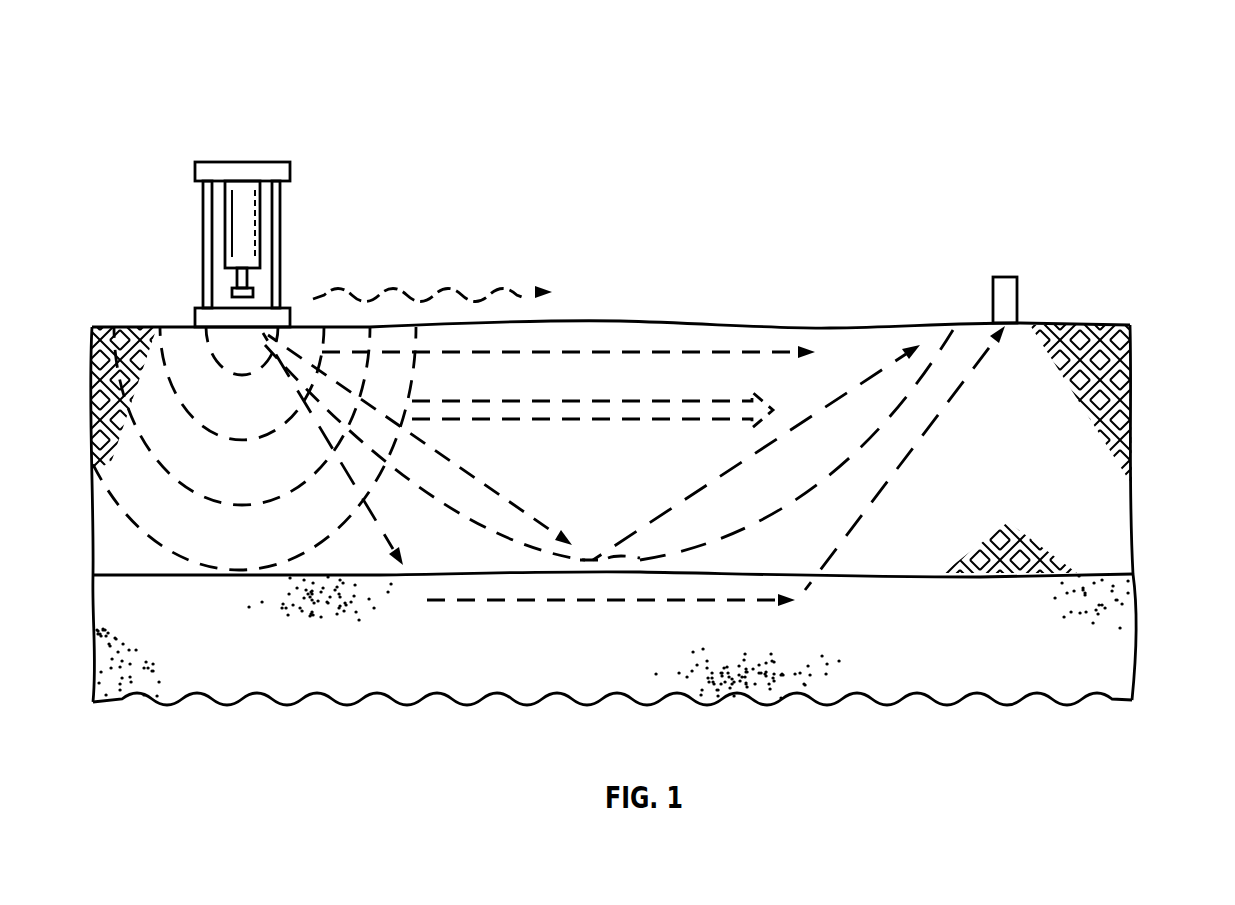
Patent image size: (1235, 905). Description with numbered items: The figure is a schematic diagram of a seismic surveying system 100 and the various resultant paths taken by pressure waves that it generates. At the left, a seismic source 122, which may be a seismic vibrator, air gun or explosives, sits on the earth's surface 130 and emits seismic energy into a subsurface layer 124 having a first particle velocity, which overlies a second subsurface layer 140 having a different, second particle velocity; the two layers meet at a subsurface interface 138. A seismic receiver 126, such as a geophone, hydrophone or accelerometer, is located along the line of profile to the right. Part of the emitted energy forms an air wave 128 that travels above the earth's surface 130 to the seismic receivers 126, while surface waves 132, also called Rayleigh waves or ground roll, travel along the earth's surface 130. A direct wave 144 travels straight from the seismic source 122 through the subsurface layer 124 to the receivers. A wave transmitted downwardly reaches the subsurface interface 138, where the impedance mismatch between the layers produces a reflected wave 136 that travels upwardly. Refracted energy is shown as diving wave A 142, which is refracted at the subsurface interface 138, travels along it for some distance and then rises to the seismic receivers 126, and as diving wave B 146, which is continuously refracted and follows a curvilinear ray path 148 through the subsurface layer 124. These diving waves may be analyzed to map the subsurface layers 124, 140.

The seismic surveying system 100 is at (1018, 121).
The seismic source 122 is at (243, 161).
The subsurface layer 124 is at (1142, 442).
The seismic receivers 126 is at (1003, 277).
The air wave 128 is at (423, 293).
The earth's surface 130 is at (1082, 325).
The surface waves 132 is at (653, 348).
The reflected wave 136 is at (683, 498).
The subsurface interface 138 is at (866, 578).
The subsurface layer 140 is at (1143, 637).
The diving wave A 142 is at (578, 604).
The direct wave 144 is at (568, 421).
The diving wave B 146 is at (833, 472).
The curvilinear ray path 148 is at (612, 563).